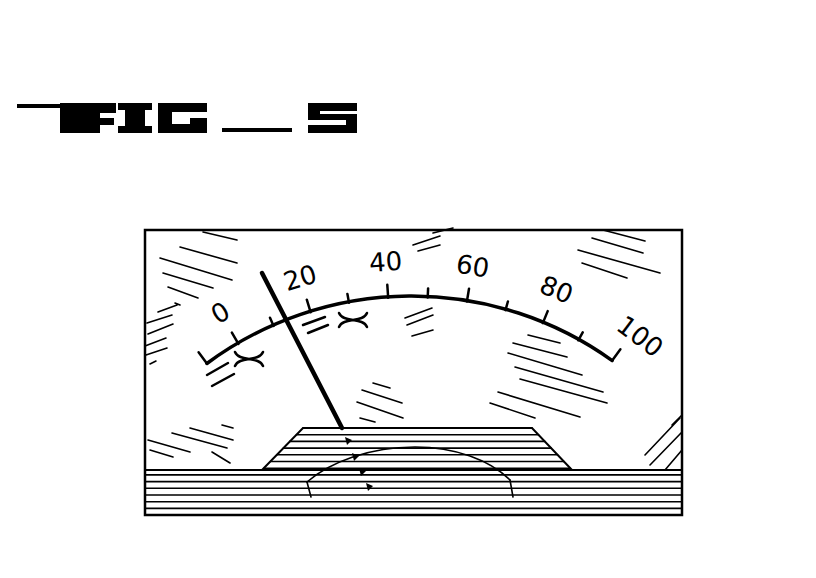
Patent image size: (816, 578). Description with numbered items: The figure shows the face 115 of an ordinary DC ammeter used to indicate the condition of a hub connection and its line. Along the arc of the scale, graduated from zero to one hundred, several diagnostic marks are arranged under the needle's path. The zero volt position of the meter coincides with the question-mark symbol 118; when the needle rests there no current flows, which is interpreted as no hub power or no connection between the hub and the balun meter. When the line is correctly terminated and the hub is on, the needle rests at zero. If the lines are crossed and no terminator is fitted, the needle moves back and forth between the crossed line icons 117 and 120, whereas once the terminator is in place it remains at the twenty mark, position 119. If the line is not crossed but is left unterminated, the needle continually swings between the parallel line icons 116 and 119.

The face 115 is at (551, 229).
The parallel line icon 116 is at (221, 387).
The crossed line icon 117 is at (247, 370).
The "?" symbol 118 is at (288, 355).
The position "20" / parallel line icon 119 is at (322, 340).
The crossed line icon 120 is at (358, 333).